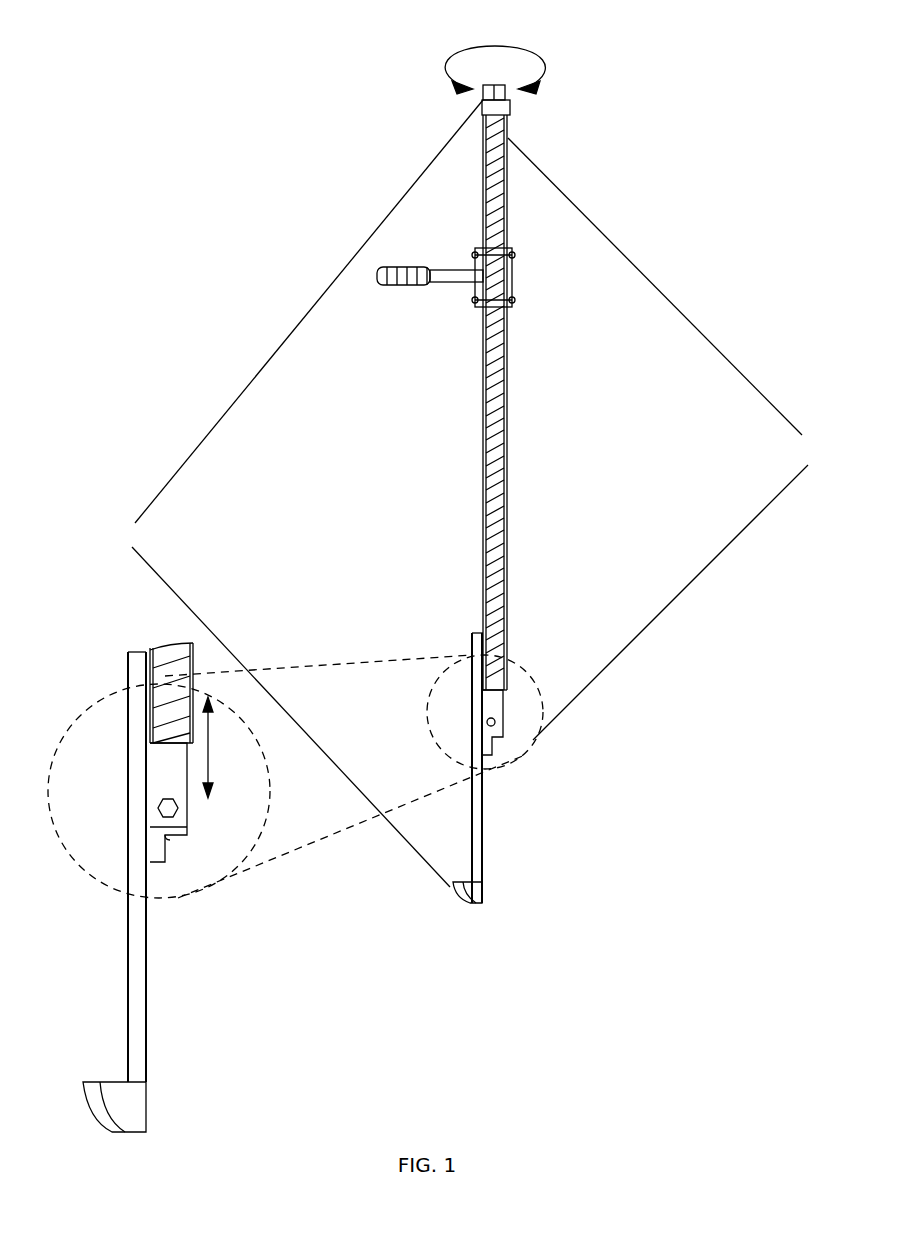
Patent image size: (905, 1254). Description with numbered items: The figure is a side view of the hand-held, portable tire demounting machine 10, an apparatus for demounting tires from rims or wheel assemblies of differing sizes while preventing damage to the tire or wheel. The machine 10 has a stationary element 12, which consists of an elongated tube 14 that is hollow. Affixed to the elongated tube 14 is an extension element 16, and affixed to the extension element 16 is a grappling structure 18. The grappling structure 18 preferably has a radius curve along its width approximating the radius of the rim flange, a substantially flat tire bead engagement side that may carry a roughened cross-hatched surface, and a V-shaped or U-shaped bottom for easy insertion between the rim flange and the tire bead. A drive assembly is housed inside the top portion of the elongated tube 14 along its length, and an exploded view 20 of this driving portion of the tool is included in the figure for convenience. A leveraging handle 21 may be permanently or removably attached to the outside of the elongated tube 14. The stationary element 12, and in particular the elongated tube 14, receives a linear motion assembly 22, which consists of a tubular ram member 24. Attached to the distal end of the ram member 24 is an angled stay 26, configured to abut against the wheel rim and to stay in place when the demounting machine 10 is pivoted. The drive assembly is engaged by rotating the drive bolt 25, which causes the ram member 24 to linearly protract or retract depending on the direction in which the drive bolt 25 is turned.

The hand-held, portable tire demounting machine 10 is at (630, 477).
The stationary element 12 is at (296, 493).
The elongated tube 14 is at (507, 403).
The extension element 16 is at (484, 828).
The grappling structure 18 is at (484, 893).
The exploded view 20 is at (527, 668).
The leveraging handle 21 is at (410, 290).
The linear motion assembly 22 is at (667, 439).
The tubular ram member 24 is at (507, 360).
The drive bolt 25 is at (505, 88).
The angled stay 26 is at (178, 845).